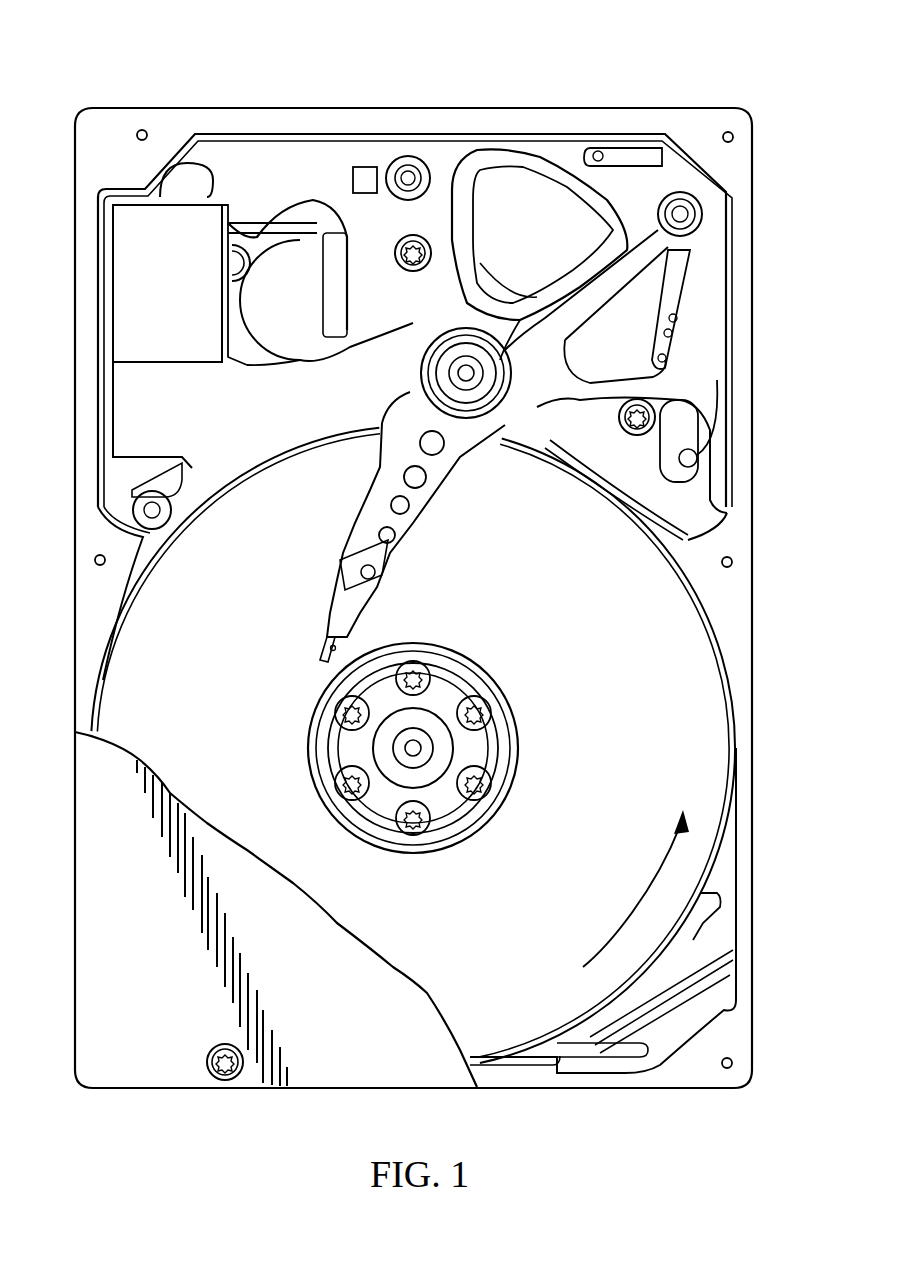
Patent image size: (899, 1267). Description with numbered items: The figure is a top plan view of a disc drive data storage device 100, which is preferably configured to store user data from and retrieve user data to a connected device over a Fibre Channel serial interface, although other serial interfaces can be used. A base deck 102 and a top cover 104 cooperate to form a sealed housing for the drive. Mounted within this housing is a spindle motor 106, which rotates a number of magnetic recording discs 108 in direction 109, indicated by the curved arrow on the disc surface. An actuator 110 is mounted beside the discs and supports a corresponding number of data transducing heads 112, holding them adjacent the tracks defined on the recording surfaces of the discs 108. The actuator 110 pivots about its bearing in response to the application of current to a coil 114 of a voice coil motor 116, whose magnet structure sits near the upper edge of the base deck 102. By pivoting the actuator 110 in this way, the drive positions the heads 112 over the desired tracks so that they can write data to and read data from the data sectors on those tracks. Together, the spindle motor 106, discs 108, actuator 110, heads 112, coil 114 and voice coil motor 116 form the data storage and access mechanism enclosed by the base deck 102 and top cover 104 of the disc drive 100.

The disc drive data storage device 100 is at (146, 82).
The base deck 102 is at (247, 363).
The top cover 104 is at (103, 787).
The spindle motor 106 is at (438, 712).
The magnetic recording discs 108 is at (678, 735).
The direction 109 is at (636, 904).
The actuator 110 is at (470, 422).
The data transducing heads 112 is at (322, 652).
The coil 114 is at (523, 160).
The voice coil motor 116 is at (571, 150).